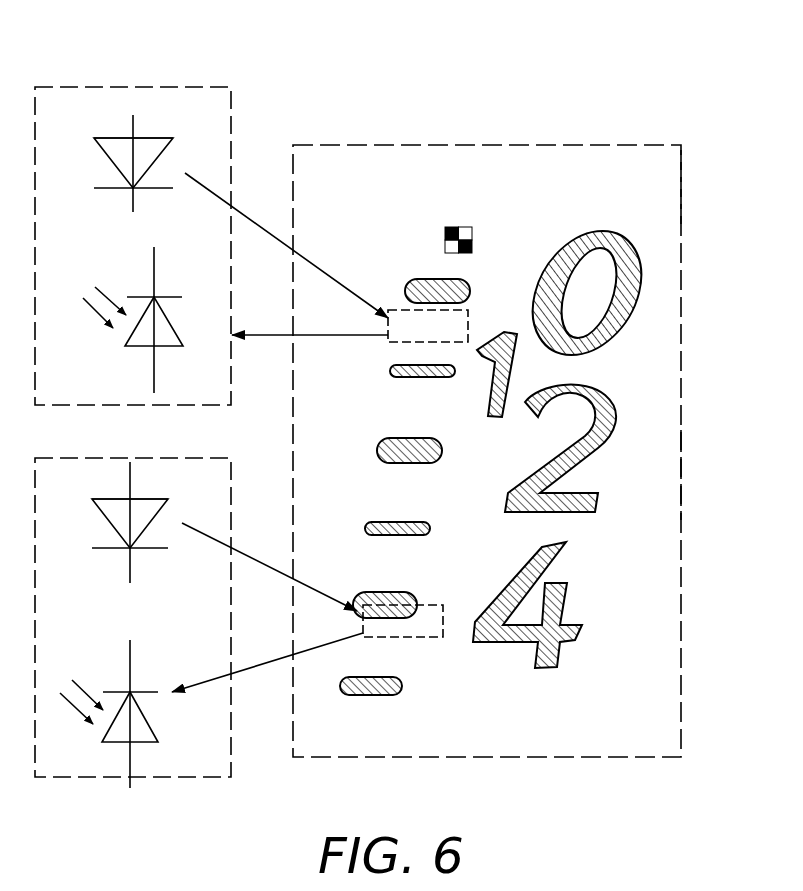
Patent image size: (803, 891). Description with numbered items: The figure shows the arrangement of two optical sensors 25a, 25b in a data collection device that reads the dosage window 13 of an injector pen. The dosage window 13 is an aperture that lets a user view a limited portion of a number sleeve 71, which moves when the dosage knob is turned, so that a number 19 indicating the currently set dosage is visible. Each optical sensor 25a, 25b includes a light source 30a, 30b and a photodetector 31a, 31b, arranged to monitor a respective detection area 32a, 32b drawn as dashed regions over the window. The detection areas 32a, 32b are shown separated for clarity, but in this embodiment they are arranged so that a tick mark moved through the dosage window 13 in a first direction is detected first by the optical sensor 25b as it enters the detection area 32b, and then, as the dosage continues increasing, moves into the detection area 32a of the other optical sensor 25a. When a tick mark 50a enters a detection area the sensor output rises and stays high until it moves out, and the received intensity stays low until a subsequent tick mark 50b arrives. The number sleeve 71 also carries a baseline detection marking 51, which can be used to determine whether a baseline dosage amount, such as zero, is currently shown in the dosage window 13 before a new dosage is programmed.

The dosage window 13 is at (517, 145).
The number 19 is at (652, 465).
The optical sensor 25a is at (130, 87).
The optical sensor 25b is at (83, 777).
The light source 30a is at (112, 163).
The light source 30b is at (105, 519).
The photodetector 31a is at (137, 348).
The photodetector 31b is at (153, 727).
The detection area 32a is at (395, 310).
The detection area 32b is at (427, 605).
The tick mark 50a is at (383, 592).
The tick mark 50b is at (402, 683).
The baseline detection marking 51 is at (463, 227).
The number sleeve 71 is at (670, 187).